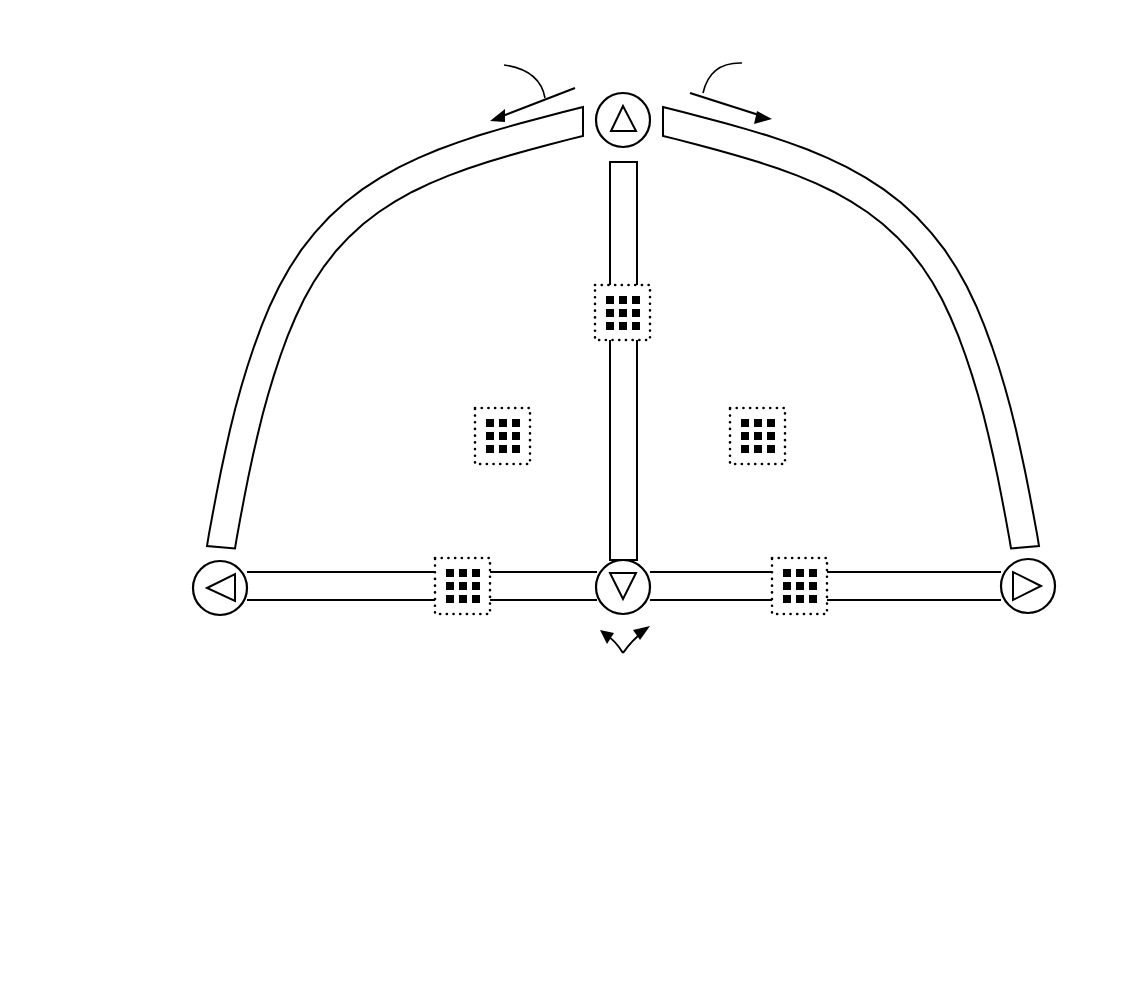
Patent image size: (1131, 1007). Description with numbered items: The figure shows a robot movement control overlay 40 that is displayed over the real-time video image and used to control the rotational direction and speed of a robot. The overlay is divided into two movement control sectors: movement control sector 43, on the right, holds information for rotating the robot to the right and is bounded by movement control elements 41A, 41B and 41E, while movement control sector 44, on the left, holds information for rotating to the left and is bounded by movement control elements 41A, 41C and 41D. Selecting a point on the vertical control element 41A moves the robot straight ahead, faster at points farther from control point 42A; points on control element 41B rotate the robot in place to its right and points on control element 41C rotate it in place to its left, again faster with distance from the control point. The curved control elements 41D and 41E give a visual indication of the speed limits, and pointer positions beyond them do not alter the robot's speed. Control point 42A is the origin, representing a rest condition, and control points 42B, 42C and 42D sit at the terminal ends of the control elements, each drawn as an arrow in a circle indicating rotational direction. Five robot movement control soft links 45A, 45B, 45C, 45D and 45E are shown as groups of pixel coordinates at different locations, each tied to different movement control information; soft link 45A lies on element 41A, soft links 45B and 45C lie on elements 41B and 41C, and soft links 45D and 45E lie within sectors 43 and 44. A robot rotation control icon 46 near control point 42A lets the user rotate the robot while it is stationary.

The robot movement control overlay 40 is at (625, 445).
The movement control element 41A is at (745, 221).
The movement control element 41B is at (948, 600).
The movement control element 41C is at (303, 600).
The movement control element 41D is at (283, 289).
The movement control element 41E is at (962, 287).
The control point 42A is at (640, 600).
The control point 42B is at (675, 43).
The control point 42C is at (1054, 590).
The control point 42D is at (196, 596).
The movement control sector 43 is at (813, 331).
The movement control sector 44 is at (429, 331).
The robot movement control soft link 45A is at (650, 298).
The robot movement control soft link 45B is at (798, 572).
The robot movement control soft link 45C is at (458, 572).
The robot movement control soft link 45D is at (785, 411).
The robot movement control soft link 45E is at (489, 411).
The robot rotation control icon 46 is at (623, 653).